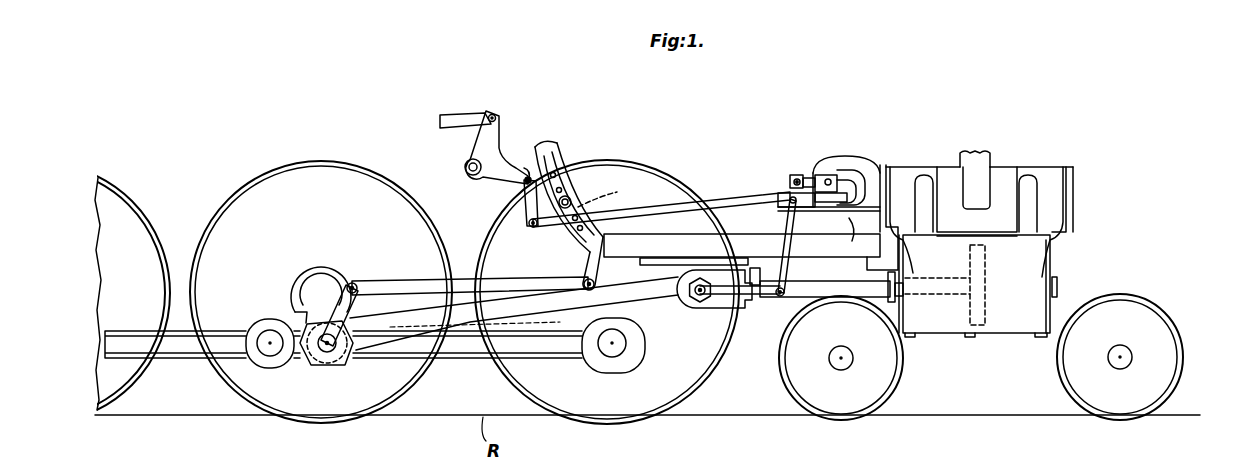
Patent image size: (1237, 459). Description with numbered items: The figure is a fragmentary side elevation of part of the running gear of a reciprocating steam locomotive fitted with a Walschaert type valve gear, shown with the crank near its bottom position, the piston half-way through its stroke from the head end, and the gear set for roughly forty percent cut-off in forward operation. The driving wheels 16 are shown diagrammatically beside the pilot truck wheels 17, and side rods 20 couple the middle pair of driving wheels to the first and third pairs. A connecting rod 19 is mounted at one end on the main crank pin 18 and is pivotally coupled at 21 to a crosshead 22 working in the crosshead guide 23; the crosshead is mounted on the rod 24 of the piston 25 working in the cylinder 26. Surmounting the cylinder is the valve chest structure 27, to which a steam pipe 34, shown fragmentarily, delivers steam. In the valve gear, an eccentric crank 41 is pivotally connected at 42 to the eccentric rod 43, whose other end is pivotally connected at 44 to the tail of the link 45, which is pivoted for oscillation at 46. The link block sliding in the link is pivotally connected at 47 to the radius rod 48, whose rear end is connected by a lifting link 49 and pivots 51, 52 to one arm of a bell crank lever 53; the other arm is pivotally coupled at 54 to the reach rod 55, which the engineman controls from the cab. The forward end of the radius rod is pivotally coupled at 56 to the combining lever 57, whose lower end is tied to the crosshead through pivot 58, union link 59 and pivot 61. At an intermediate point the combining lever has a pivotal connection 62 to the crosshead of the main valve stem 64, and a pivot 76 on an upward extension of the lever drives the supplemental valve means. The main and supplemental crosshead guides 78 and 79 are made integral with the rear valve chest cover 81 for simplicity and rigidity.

The driving wheels 16 is at (113, 371).
The pilot truck wheels 17 is at (885, 386).
The main crank pin 18 is at (323, 335).
The connecting rod 19 is at (514, 335).
The side rods 20 is at (375, 352).
The pivotal coupling 21 is at (683, 285).
The crosshead 22 is at (664, 267).
The crosshead guide 23 is at (657, 244).
The piston rod 24 is at (848, 289).
The piston 25 is at (987, 290).
The cylinder 26 is at (1010, 327).
The valve chest structure 27 is at (978, 188).
The steam pipe 34 is at (973, 152).
The eccentric crank 41 is at (356, 302).
The pivotal connection 42 is at (353, 284).
The eccentric rod 43 is at (407, 281).
The pivotal connection 44 is at (584, 282).
The link 45 is at (582, 243).
The link pivot 46 is at (571, 199).
The link block pivot 47 is at (583, 207).
The radius rod 48 is at (710, 193).
The lifting link 49 is at (526, 200).
The pivot 51 is at (530, 226).
The pivot 52 is at (528, 177).
The bell crank lever 53 is at (483, 140).
The pivotal coupling 54 is at (493, 115).
The reach rod 55 is at (452, 115).
The pivotal coupling 56 is at (791, 186).
The combining lever 57 is at (778, 211).
The pivot 58 is at (780, 296).
The union link 59 is at (752, 300).
The pivot 61 is at (700, 298).
The pivotal connection 62 is at (783, 198).
The main valve stem 64 is at (832, 203).
The pivot 76 is at (799, 176).
The main crosshead guide 78 is at (853, 222).
The supplemental crosshead guide 79 is at (846, 160).
The rear valve chest cover 81 is at (879, 172).